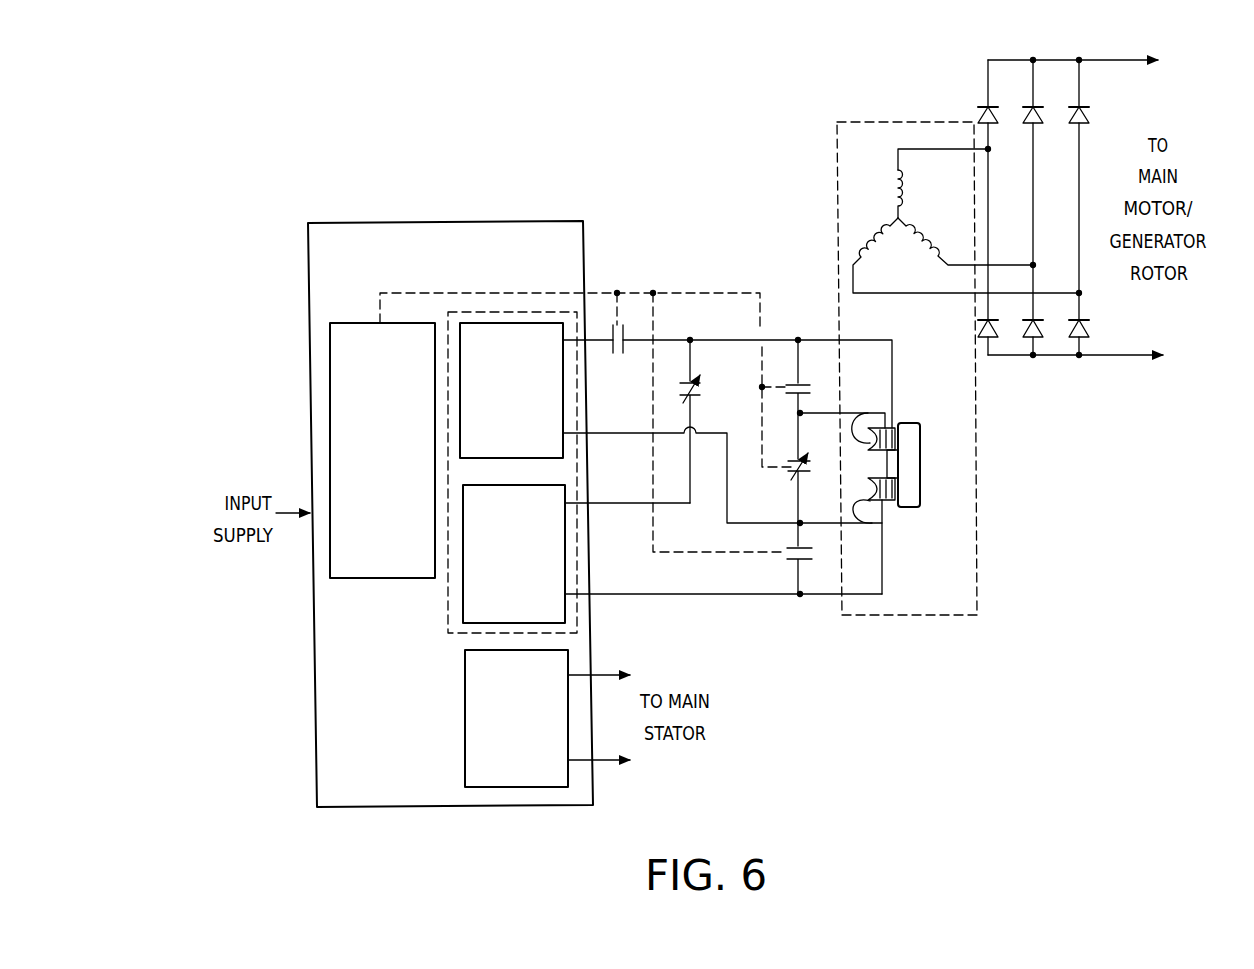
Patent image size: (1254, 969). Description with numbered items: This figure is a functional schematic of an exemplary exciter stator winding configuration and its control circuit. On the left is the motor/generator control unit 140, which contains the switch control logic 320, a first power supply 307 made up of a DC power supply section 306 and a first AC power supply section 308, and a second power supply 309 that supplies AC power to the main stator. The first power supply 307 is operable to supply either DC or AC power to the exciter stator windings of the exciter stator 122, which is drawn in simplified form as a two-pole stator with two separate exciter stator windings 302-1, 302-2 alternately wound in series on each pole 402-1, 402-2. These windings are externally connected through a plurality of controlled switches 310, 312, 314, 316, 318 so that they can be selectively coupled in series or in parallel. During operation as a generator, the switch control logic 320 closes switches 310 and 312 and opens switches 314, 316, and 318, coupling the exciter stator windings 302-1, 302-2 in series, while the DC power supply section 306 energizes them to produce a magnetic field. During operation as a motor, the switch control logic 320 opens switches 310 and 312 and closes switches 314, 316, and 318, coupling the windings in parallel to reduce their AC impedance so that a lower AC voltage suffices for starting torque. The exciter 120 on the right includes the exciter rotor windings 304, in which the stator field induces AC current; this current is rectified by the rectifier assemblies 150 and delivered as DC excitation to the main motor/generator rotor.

The control unit 140 is at (343, 240).
The switch control logic 320 is at (330, 378).
The DC power supply section 306 is at (470, 587).
The first power supply 307 is at (452, 633).
The first AC power supply section 308 is at (543, 322).
The second power supply 309 is at (473, 707).
The switch 310 is at (703, 395).
The switch 312 is at (800, 478).
The switch 314 is at (623, 355).
The switch 316 is at (798, 380).
The switch 318 is at (795, 560).
The exciter stator winding 302-1 is at (856, 535).
The exciter stator winding 302-2 is at (835, 596).
The pole 402-1 is at (866, 408).
The pole 402-2 is at (870, 522).
The exciter stator 122 is at (936, 455).
The exciter 120 is at (868, 122).
The exciter rotor windings 304 is at (862, 205).
The rectifier assemblies 150 is at (962, 96).